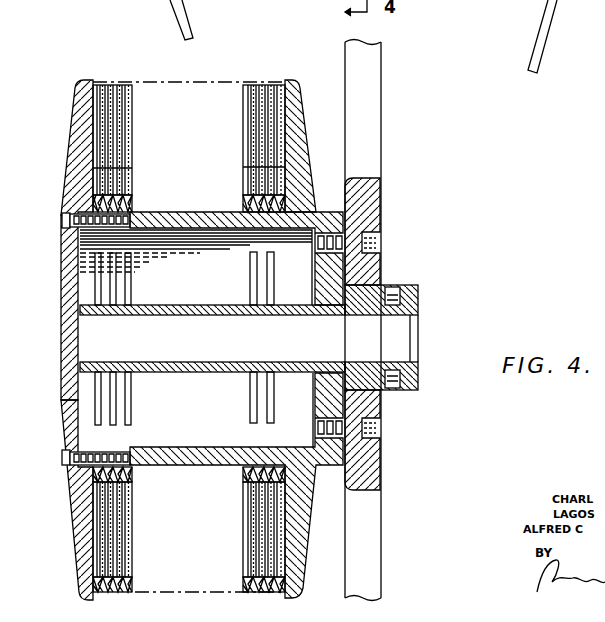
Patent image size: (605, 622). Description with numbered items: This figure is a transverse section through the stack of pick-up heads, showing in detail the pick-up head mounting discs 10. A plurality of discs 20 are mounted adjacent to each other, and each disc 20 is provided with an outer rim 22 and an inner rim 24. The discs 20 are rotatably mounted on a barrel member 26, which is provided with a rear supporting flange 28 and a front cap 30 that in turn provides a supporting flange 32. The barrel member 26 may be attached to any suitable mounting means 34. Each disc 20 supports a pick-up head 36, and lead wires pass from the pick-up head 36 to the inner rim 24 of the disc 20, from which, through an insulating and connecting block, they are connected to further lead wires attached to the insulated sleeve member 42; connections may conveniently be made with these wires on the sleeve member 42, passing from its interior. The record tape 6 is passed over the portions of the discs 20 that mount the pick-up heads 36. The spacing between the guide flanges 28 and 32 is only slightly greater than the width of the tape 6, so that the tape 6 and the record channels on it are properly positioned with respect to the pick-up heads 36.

The record tape 6 is at (180, 80).
The pick-up head mounting discs 10 is at (122, 45).
The disc 20 is at (128, 175).
The outer rim 22 is at (135, 583).
The inner rim 24 is at (135, 472).
The barrel member 26 is at (184, 212).
The rear supporting flange 28 is at (302, 157).
The front cap 30 is at (63, 268).
The supporting flange 32 is at (72, 110).
The mounting means 34 is at (372, 195).
The pick-up head 36 is at (241, 106).
The insulated sleeve member 42 is at (282, 316).